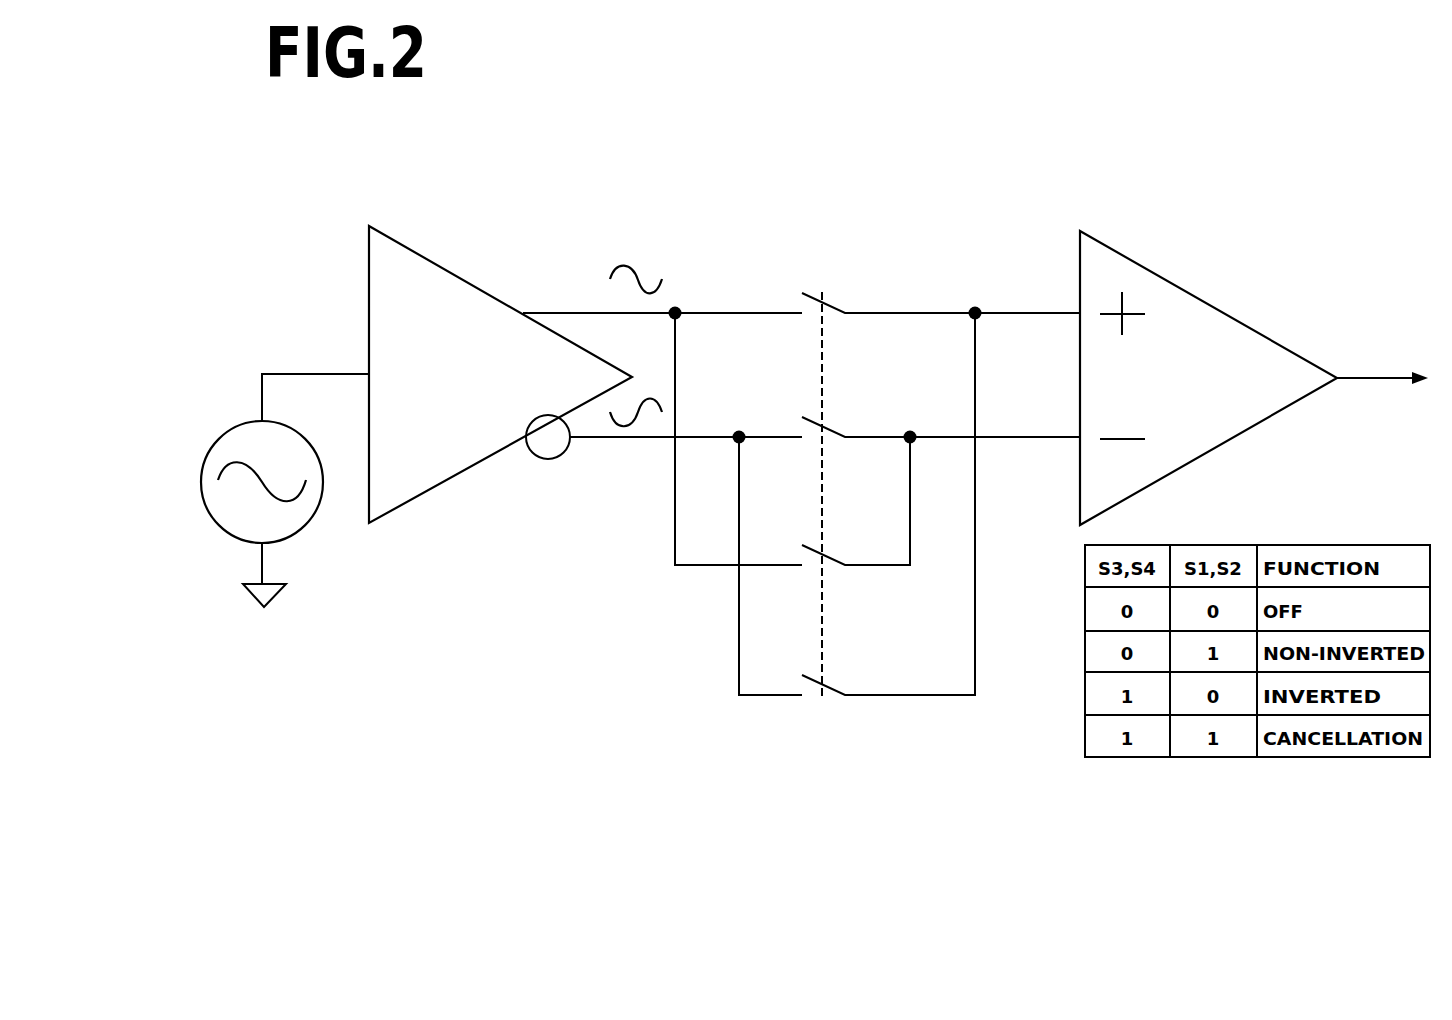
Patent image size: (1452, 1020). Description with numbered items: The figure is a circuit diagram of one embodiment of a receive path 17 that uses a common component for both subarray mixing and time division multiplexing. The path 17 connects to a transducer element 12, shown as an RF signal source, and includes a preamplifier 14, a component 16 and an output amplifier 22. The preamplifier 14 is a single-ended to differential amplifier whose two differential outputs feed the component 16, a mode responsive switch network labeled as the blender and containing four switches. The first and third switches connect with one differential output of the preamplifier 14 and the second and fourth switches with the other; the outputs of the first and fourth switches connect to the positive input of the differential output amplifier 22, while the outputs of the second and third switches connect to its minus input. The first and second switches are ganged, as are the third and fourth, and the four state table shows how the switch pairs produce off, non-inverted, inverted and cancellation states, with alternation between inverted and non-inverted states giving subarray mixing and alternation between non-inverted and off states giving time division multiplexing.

The transducer element 12 is at (207, 516).
The preamplifier 14 is at (432, 262).
The component 16 is at (827, 220).
The path 17 is at (503, 171).
The output amplifier 22 is at (1182, 288).